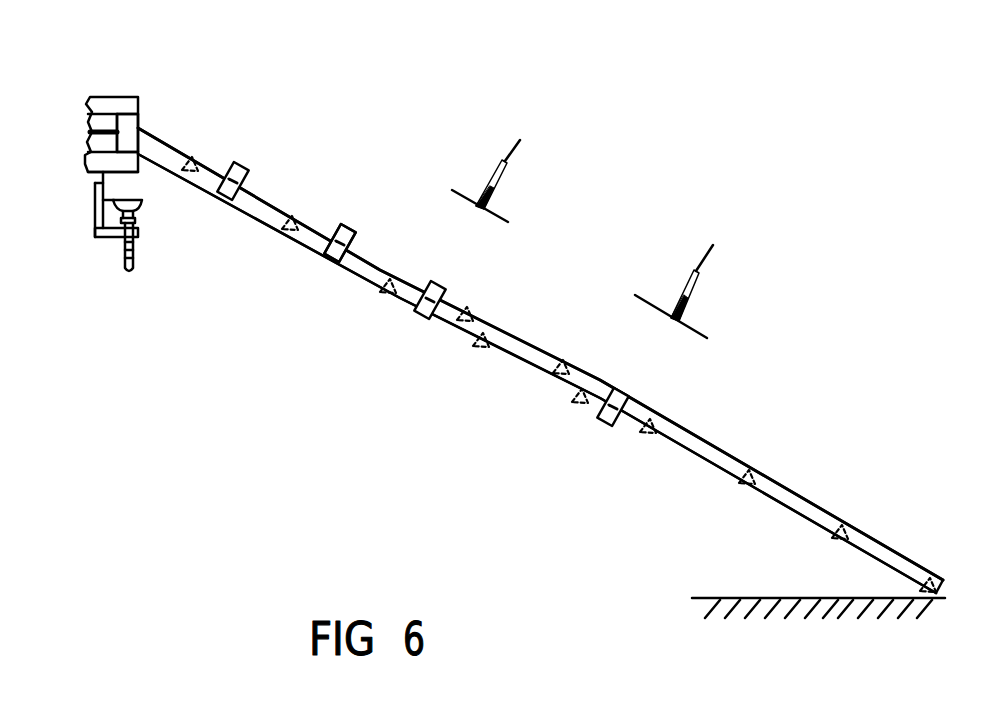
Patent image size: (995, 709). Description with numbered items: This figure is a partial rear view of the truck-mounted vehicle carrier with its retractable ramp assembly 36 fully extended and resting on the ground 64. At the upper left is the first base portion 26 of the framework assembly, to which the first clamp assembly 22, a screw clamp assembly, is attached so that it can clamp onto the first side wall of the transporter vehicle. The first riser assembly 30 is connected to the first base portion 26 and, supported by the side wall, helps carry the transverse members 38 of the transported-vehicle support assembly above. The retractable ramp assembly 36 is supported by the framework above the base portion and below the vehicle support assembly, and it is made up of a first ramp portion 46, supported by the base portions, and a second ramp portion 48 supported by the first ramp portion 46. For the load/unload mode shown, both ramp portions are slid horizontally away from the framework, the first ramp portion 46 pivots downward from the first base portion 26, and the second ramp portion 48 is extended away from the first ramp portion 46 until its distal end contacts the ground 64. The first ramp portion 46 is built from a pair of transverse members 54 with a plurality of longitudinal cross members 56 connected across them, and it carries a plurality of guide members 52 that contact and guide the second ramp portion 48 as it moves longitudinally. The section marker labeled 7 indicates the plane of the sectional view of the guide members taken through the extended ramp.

The first clamp assembly 22 is at (106, 250).
The first base portion 26 is at (138, 168).
The first riser assembly 30 is at (130, 132).
The retractable ramp assembly 36 is at (495, 359).
The transverse members 38 is at (124, 105).
The first ramp portion 46 is at (279, 245).
The second ramp portion 48 is at (773, 464).
The guide members 52 is at (243, 173).
The transverse members 54 is at (350, 266).
The longitudinal cross members 56 is at (196, 162).
The ground 64 is at (855, 600).
The section line FIG. 7 is at (598, 222).